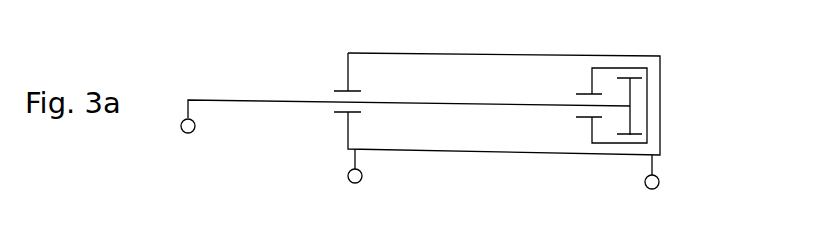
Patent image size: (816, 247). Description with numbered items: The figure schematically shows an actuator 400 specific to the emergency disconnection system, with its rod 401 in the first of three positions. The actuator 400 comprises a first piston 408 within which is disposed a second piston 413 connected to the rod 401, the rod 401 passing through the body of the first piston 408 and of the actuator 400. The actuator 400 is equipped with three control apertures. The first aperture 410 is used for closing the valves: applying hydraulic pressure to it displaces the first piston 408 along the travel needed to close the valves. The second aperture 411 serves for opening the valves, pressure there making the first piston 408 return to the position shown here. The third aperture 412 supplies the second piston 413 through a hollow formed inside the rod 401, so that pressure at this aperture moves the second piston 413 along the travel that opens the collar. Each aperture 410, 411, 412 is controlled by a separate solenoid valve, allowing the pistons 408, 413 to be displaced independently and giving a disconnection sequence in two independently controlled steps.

The actuator 400 is at (440, 53).
The rod 401 is at (260, 100).
The first piston 408 is at (608, 68).
The first aperture 410 is at (645, 187).
The second aperture 411 is at (361, 181).
The third aperture 412 is at (194, 130).
The second piston 413 is at (628, 97).